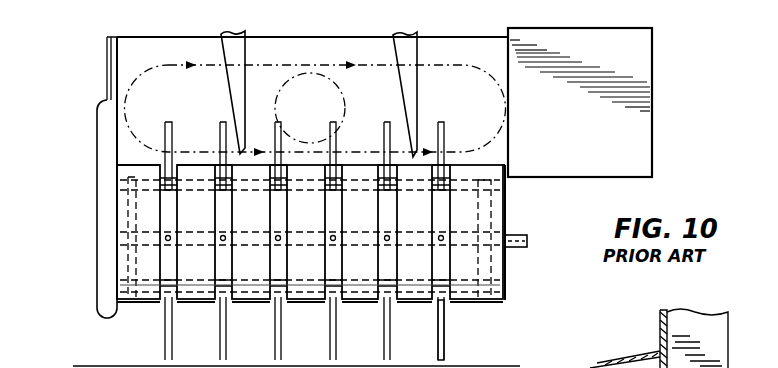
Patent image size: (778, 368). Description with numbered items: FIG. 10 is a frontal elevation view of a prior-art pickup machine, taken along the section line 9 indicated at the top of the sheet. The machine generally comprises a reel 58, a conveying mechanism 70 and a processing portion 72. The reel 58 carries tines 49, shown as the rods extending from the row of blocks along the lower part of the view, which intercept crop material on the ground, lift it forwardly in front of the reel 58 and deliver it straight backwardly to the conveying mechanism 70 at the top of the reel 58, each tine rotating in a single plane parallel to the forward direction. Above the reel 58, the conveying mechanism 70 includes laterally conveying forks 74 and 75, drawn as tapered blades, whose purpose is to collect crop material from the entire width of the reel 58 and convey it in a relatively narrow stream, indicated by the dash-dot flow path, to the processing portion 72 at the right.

The section line 9- 9 is at (102, 55).
The conveying mechanism 70 is at (366, 31).
The processing portion 72 is at (636, 147).
The laterally conveying fork 74 is at (414, 96).
The laterally conveying fork 75 is at (236, 88).
The tines 49 is at (445, 331).
The reel 58 is at (509, 252).